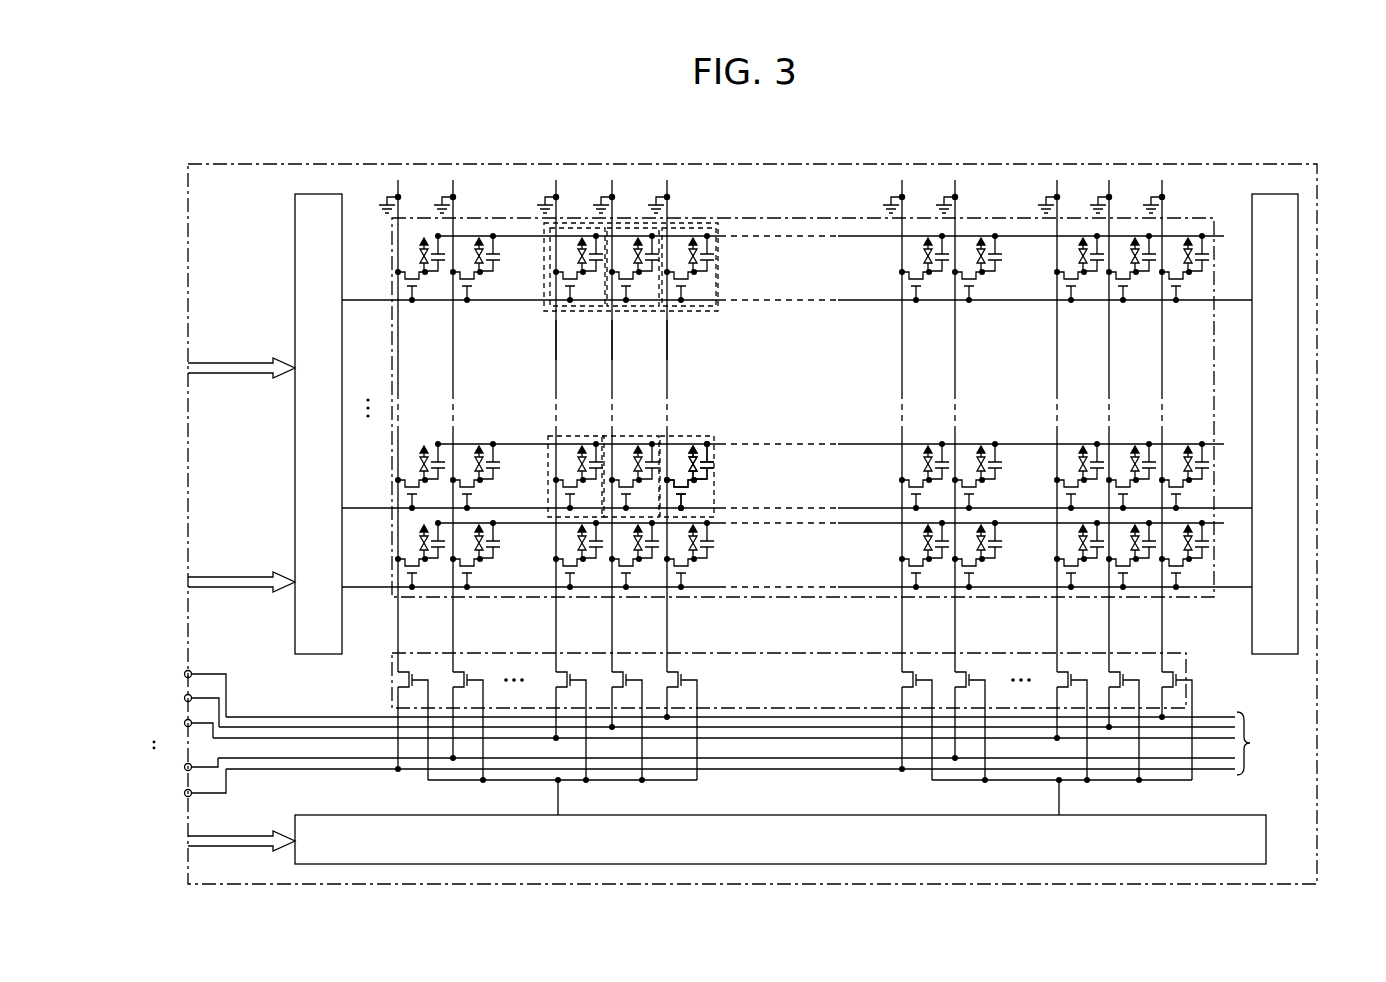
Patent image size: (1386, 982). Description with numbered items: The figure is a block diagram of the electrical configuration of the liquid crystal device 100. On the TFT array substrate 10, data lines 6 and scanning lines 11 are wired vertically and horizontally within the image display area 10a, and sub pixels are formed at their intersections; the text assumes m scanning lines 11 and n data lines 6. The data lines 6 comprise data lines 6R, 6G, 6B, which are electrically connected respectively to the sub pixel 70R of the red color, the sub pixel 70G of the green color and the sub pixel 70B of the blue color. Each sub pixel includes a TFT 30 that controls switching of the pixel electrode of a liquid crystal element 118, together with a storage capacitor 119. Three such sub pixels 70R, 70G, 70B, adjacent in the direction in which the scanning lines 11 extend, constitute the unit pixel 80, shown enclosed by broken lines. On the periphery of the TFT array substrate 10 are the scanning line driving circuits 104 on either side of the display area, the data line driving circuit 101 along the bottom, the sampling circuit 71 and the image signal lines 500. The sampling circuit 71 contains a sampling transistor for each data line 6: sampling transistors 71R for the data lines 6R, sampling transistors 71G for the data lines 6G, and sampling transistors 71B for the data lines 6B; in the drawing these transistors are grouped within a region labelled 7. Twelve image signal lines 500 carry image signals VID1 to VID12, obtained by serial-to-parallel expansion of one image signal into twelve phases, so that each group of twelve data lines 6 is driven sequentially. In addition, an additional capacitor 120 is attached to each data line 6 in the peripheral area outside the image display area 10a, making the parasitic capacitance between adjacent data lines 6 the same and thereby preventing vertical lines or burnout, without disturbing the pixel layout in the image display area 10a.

The liquid crystal device 100 is at (358, 124).
The TFT array substrate 10 is at (1276, 162).
The image display area 10a is at (1204, 216).
The scanning line driving circuit 104 is at (295, 283).
The data line driving circuit 101 is at (1266, 838).
The additional capacitor 120 is at (883, 208).
The data line 6 is at (902, 341).
The scanning line 11 is at (861, 507).
The unit pixel 80 is at (544, 256).
The sub pixel of the blue color 70B is at (570, 228).
The sub pixel of the green color 70G is at (628, 228).
The sub pixel of the red color 70R is at (690, 228).
The data line 6B is at (557, 342).
The data line 6G is at (613, 342).
The data line 6R is at (668, 342).
The liquid crystal element 118 is at (689, 466).
The storage capacitor 119 is at (716, 464).
The TFT 30 is at (692, 489).
The sampling circuit 71 is at (398, 680).
The sampling transistor 71B is at (555, 676).
The sampling transistor 71G is at (612, 676).
The sampling transistor 71R is at (667, 676).
The sampling circuit 7 is at (1175, 653).
The image signal line 500 is at (751, 743).